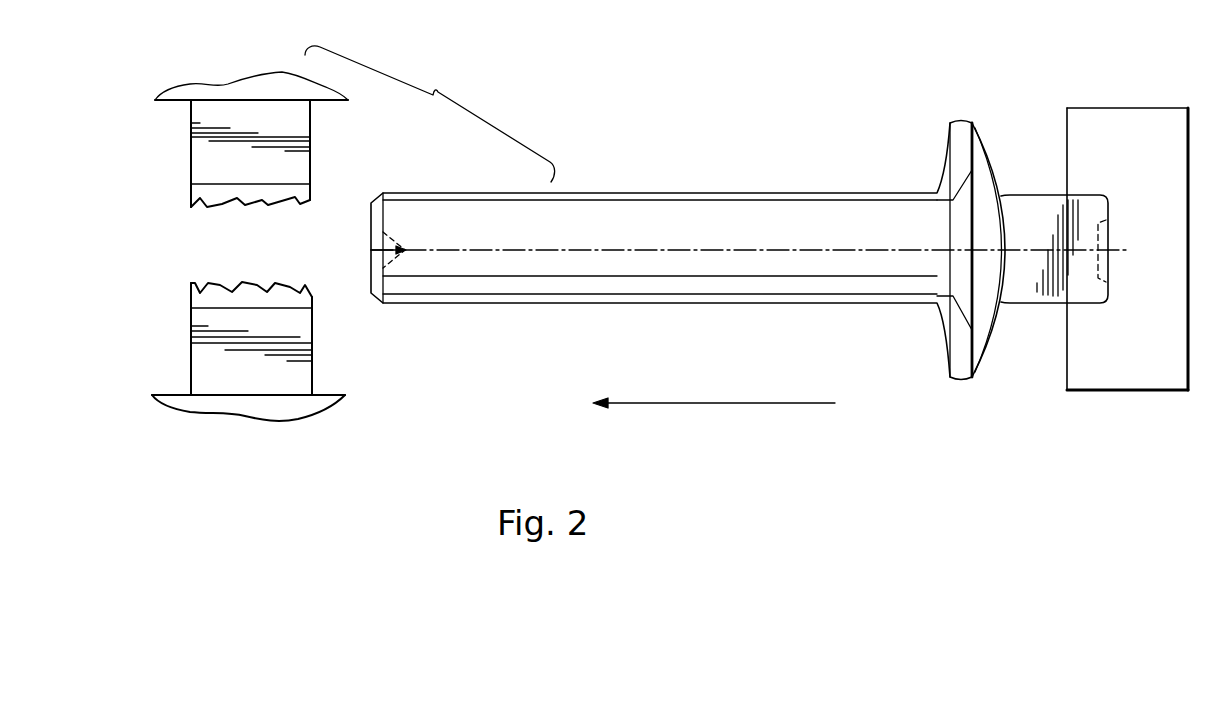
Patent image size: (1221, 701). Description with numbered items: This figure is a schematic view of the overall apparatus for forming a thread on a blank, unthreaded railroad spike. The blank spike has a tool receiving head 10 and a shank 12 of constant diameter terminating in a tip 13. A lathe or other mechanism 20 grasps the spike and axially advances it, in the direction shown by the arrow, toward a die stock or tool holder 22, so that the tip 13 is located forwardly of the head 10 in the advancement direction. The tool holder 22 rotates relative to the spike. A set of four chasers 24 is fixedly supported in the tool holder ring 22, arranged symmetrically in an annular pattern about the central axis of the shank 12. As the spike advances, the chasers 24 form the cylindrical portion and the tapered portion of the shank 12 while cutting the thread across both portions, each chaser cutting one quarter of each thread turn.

The tool receiving head 10 is at (1027, 195).
The shank 12 is at (768, 193).
The tip 13 is at (383, 195).
The lathe 20 is at (1110, 108).
The tool holder 22 is at (191, 137).
The chasers 24 is at (191, 193).